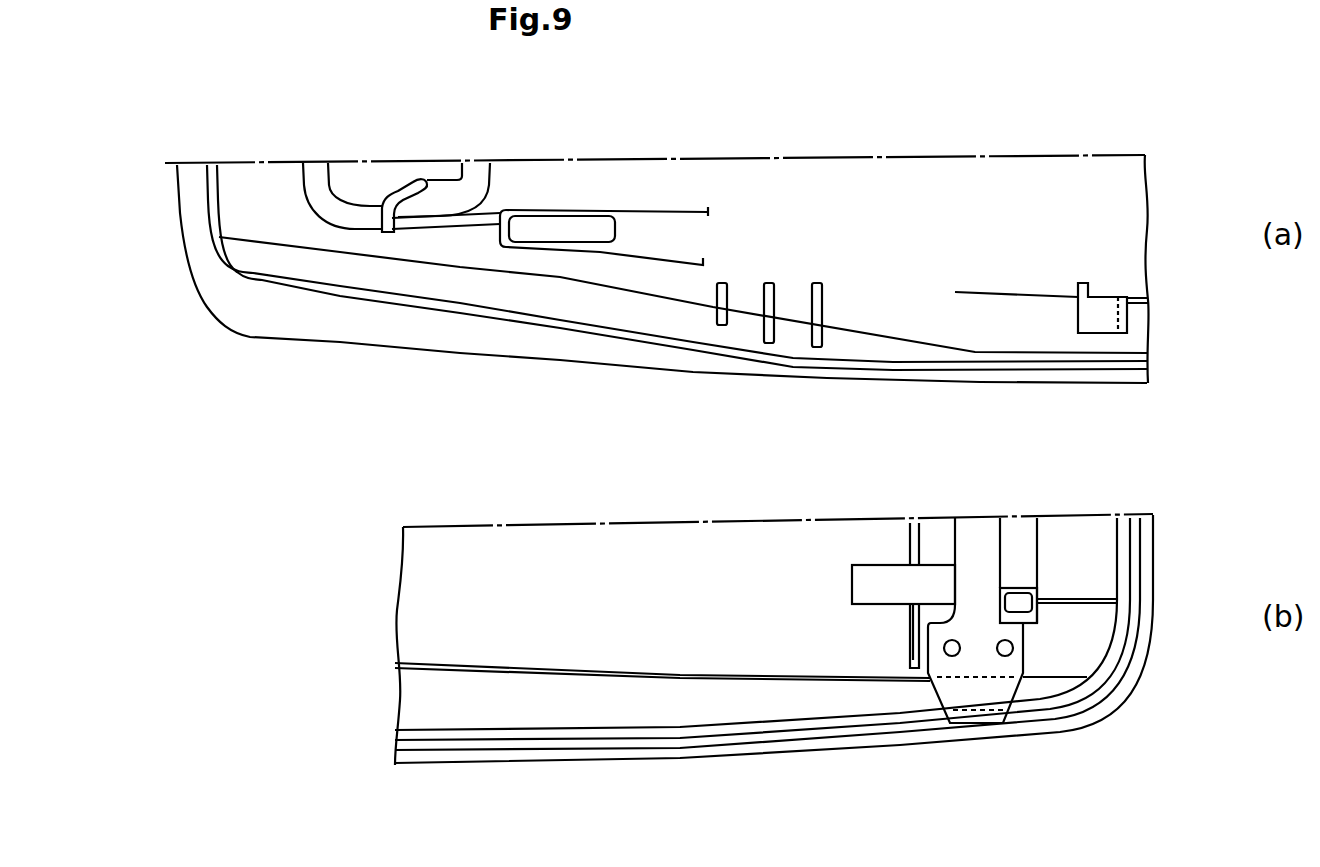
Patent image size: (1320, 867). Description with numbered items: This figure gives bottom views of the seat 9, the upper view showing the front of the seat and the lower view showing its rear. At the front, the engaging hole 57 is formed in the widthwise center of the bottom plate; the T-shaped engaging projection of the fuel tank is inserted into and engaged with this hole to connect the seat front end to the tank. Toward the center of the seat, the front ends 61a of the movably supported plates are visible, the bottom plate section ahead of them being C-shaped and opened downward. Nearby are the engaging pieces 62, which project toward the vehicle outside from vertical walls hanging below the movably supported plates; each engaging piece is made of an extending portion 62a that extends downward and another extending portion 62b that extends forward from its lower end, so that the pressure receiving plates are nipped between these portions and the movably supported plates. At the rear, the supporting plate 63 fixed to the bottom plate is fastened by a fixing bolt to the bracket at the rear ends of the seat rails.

The seat 9 is at (403, 350).
The engaging hole 57 is at (383, 206).
The front ends of the movably supported plates 61a is at (987, 335).
The engaging pieces 62 is at (1107, 333).
The extending portions 62a is at (1118, 314).
The other extending portions 62b is at (1080, 321).
The supporting plate 63 is at (983, 697).